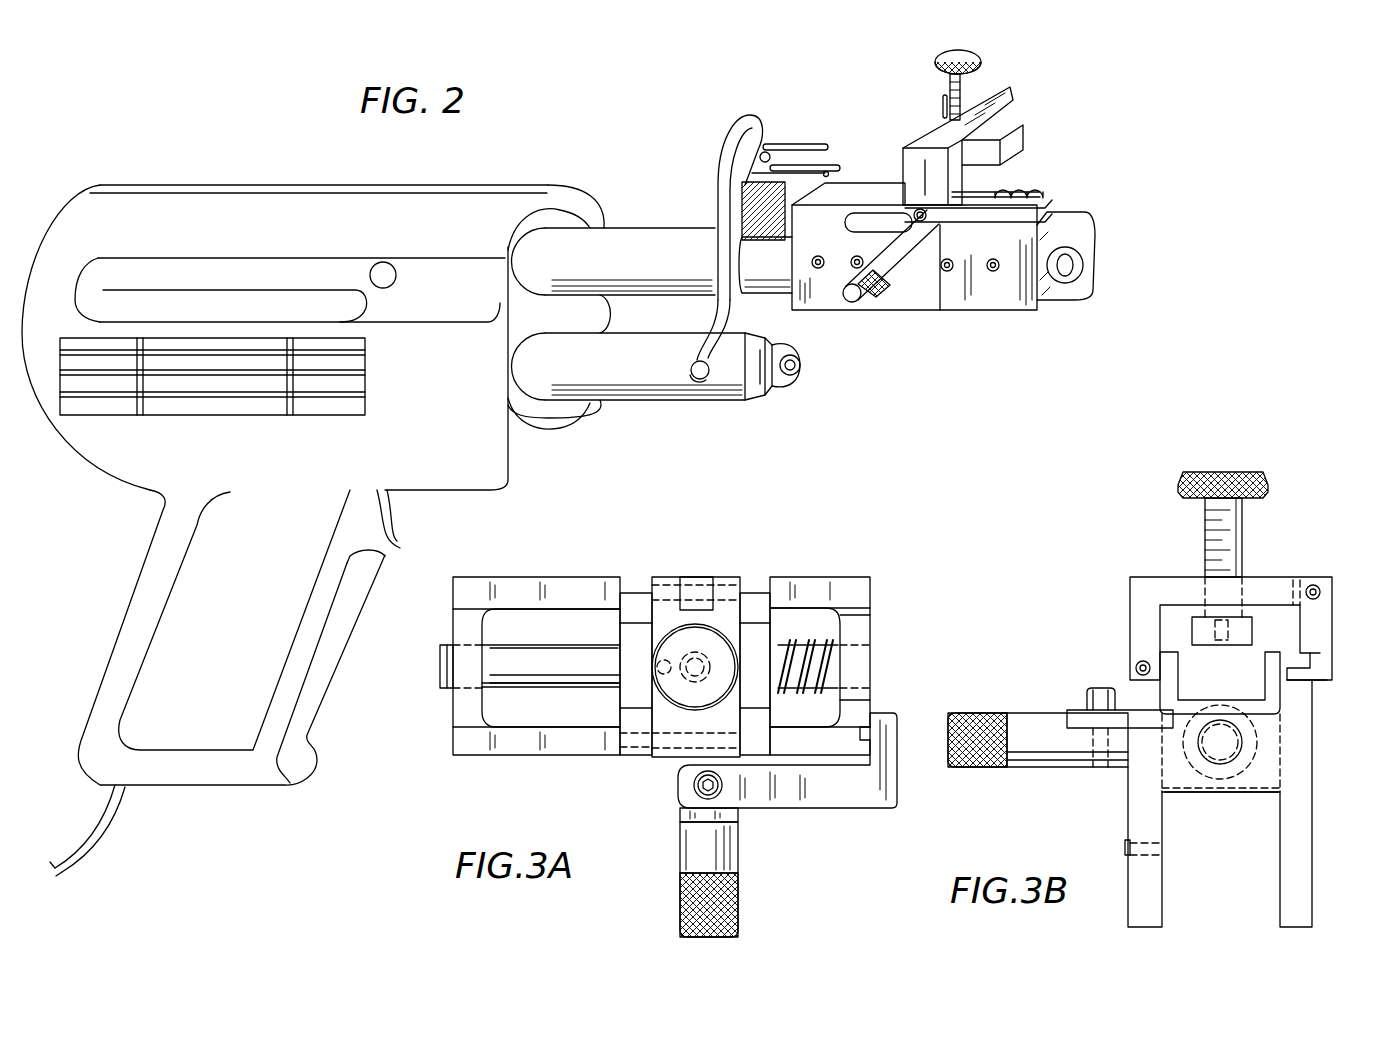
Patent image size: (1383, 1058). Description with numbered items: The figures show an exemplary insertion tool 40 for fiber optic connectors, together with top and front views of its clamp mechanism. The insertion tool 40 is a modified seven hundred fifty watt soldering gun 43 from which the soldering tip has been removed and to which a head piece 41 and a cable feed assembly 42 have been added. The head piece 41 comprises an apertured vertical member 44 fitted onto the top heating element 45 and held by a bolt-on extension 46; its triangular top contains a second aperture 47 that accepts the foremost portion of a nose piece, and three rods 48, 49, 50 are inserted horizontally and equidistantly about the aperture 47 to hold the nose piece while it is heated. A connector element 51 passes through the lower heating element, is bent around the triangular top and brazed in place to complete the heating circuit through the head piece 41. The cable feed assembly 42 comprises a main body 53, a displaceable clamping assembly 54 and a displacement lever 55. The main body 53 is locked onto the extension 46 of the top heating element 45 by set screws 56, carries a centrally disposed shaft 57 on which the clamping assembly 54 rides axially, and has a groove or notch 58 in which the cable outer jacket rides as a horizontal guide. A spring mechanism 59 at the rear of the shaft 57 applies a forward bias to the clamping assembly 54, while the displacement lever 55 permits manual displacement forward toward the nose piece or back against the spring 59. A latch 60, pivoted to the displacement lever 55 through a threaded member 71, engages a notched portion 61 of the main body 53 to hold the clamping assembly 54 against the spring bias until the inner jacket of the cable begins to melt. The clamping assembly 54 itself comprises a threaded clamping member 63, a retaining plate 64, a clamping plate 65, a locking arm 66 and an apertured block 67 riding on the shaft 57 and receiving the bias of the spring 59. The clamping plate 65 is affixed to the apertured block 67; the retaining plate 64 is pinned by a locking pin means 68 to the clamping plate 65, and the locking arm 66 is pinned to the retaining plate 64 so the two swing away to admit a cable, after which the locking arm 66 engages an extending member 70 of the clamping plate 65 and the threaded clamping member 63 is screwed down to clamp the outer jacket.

In FIG. 2, the insertion tool 40 is at (620, 157).
In FIG. 2, the head piece 41 is at (735, 300).
In FIG. 2, the cable feed assembly 42 is at (818, 312).
In FIG. 2, the soldering gun 43 is at (330, 655).
In FIG. 2, the apertured vertical member 44 is at (745, 167).
In FIG. 2, the top heating element 45 is at (677, 236).
In FIG. 2, the extension 46 is at (1050, 300).
In FIG. 2, the second aperture 47 is at (770, 163).
In FIG. 2, the rod 48 is at (815, 147).
In FIG. 2, the rod 49 is at (752, 174).
In FIG. 2, the rod 50 is at (825, 167).
In FIG. 2, the connector element 51 is at (693, 378).
In FIG. 2, the main body 53 is at (1003, 295).
In FIG. 2, the displaceable clamping assembly 54 is at (1012, 95).
In FIG. 3A, the displaceable clamping assembly 54 is at (623, 758).
In FIG. 3B, the displaceable clamping assembly 54 is at (1165, 828).
In FIG. 2, the displacement lever 55 is at (868, 298).
In FIG. 3A, the displacement lever 55 is at (740, 855).
In FIG. 3B, the displacement lever 55 is at (975, 770).
In FIG. 2, the set screws 56 is at (990, 267).
In FIG. 3B, the set screws 56 is at (1125, 848).
In FIG. 2, the shaft 57 is at (852, 200).
In FIG. 3A, the shaft 57 is at (558, 655).
In FIG. 3B, the shaft 57 is at (1232, 752).
In FIG. 2, the groove or notch 58 is at (840, 195).
In FIG. 2, the spring mechanism 59 is at (1028, 183).
In FIG. 3A, the spring mechanism 59 is at (812, 640).
In FIG. 2, the latch 60 is at (1060, 212).
In FIG. 3A, the latch 60 is at (893, 767).
In FIG. 3B, the latch 60 is at (1080, 722).
In FIG. 3A, the notched portion 61 is at (868, 706).
In FIG. 2, the threaded clamping member 63 is at (945, 85).
In FIG. 3A, the threaded clamping member 63 is at (690, 655).
In FIG. 3B, the threaded clamping member 63 is at (1243, 510).
In FIG. 3A, the retaining plate 64 is at (733, 605).
In FIG. 3B, the retaining plate 64 is at (1165, 577).
In FIG. 3B, the clamping plate 65 is at (1133, 668).
In FIG. 3B, the locking arm 66 is at (1320, 667).
In FIG. 3B, the apertured block 67 is at (1200, 792).
In FIG. 3B, the locking pin means 68 is at (1142, 660).
In FIG. 3B, the extending member 70 is at (1267, 663).
In FIG. 2, the threaded member 71 is at (920, 215).
In FIG. 3A, the threaded member 71 is at (700, 790).
In FIG. 3B, the threaded member 71 is at (1095, 688).